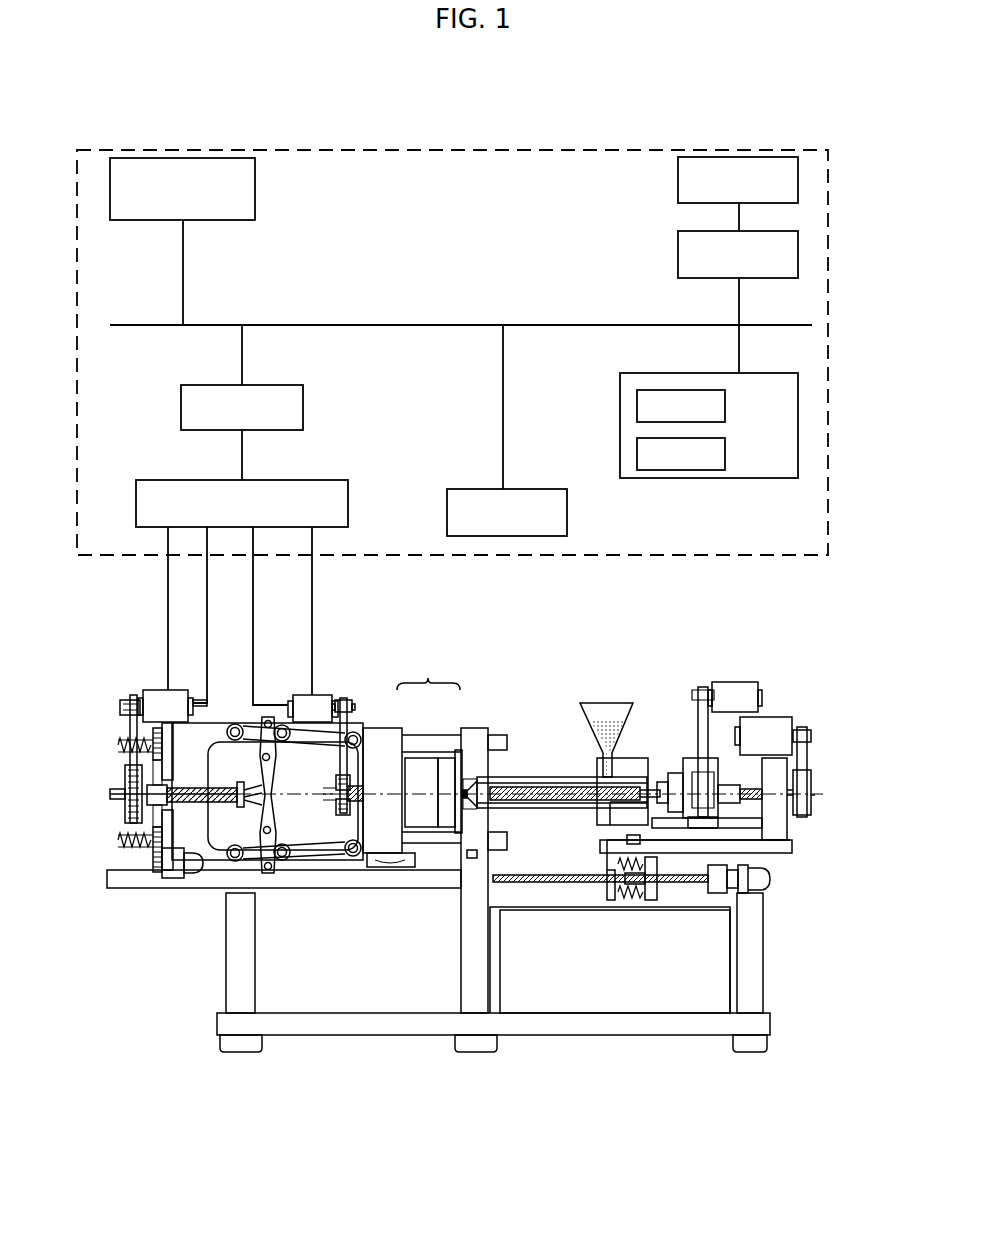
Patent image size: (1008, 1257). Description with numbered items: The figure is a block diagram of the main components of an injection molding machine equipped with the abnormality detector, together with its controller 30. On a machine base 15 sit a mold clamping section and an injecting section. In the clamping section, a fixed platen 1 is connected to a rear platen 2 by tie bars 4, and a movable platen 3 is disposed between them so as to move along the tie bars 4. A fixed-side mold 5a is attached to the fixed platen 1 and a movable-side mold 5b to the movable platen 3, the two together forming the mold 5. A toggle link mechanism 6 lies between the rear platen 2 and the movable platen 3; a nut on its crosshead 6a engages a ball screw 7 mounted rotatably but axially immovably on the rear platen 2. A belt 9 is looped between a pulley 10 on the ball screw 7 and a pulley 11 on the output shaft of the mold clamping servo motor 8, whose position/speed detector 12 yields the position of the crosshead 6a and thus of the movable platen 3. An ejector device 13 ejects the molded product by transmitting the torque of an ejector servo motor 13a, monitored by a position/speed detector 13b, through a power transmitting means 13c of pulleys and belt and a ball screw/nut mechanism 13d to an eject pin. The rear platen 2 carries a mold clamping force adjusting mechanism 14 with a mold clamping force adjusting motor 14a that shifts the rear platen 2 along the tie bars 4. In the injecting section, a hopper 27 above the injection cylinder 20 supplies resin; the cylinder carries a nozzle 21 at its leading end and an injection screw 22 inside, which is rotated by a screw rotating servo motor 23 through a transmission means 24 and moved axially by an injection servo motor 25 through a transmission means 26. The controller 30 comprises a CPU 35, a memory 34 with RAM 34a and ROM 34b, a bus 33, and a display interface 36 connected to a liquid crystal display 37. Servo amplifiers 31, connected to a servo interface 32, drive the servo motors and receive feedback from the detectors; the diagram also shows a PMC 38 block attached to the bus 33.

The fixed platen 1 is at (470, 728).
The rear platen 2 is at (210, 723).
The movable platen 3 is at (380, 728).
The tie bars 4 is at (428, 885).
The mold 5 is at (428, 673).
The fixed-side mold 5a is at (445, 758).
The movable-side mold 5b is at (420, 758).
The toggle link mechanism 6 is at (278, 780).
The crosshead 6a is at (240, 807).
The ball screw 7 is at (228, 790).
The mold clamping servo motor 8 is at (160, 690).
The belt 9 is at (130, 740).
The pulley 10 is at (125, 795).
The pulley 11 is at (132, 697).
The position/speed detector 12 is at (194, 700).
The ejector device 13 is at (347, 710).
The ejector servo motor 13a is at (343, 698).
The position/speed detector 13b is at (294, 700).
The power transmitting means 13c is at (337, 770).
The ball screw/nut mechanism 13d is at (337, 806).
The mold clamping force adjusting mechanism 14 is at (140, 849).
The mold clamping force adjusting motor 14a is at (187, 878).
The machine base 15 is at (350, 1035).
The injection cylinder 20 is at (590, 777).
The nozzle 21 is at (480, 790).
The injection screw 22 is at (556, 803).
The screw rotating servo motor 23 is at (727, 682).
The transmission means 24 is at (700, 720).
The injection servo motor 25 is at (775, 717).
The transmission means 26 is at (806, 760).
The hopper 27 is at (600, 710).
The controller 30 is at (428, 150).
The servo amplifiers 31 is at (348, 503).
The servo interface 32 is at (303, 405).
The bus 33 is at (445, 325).
The memory 34 is at (740, 478).
The RAM 34a is at (637, 405).
The ROM 34b is at (637, 453).
The processor (CPU) 35 is at (255, 190).
The display interface 36 is at (678, 254).
The liquid crystal display 37 is at (678, 181).
The PMC 38 is at (567, 521).